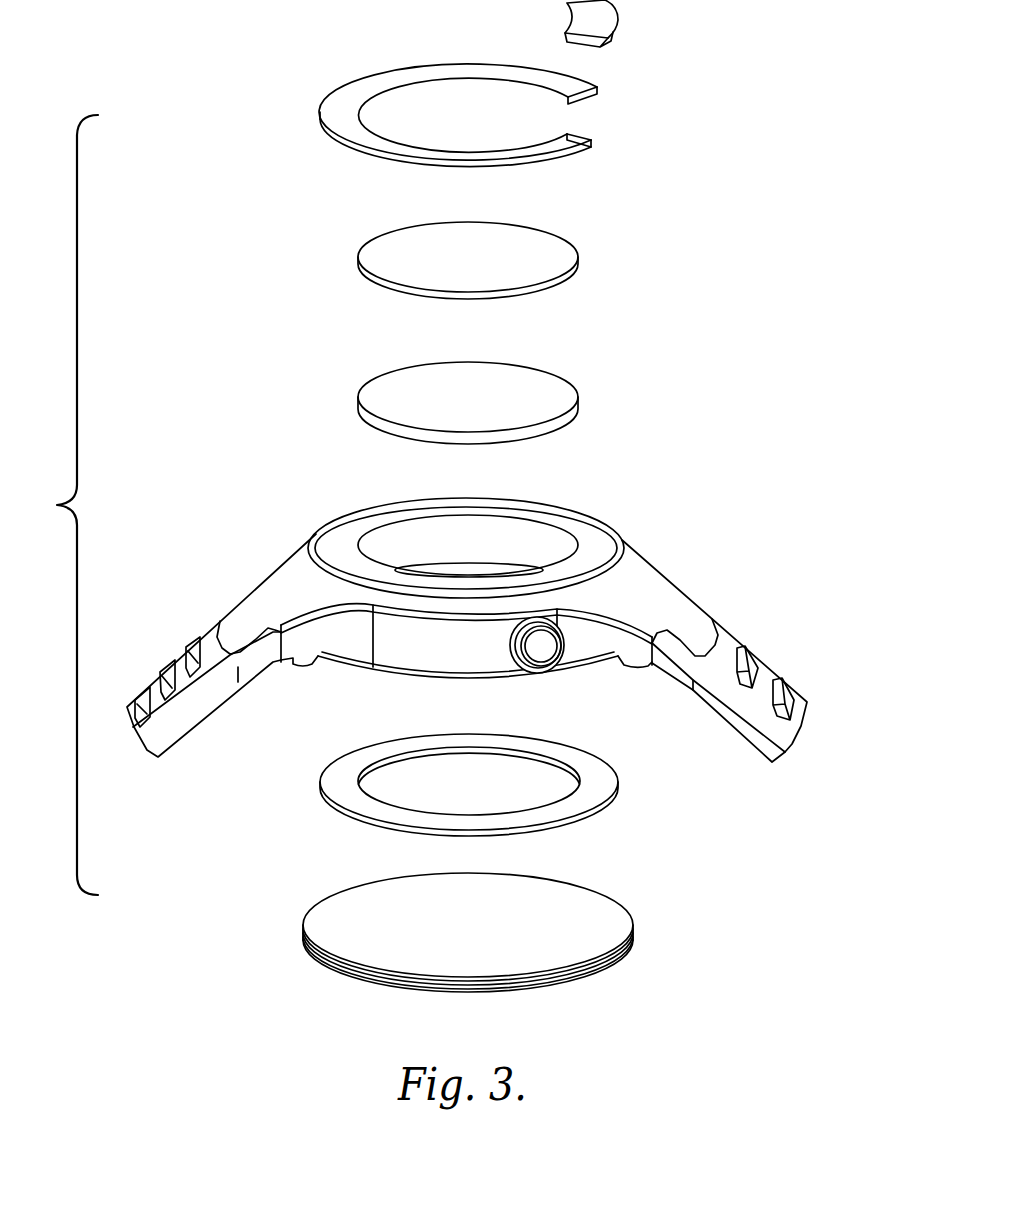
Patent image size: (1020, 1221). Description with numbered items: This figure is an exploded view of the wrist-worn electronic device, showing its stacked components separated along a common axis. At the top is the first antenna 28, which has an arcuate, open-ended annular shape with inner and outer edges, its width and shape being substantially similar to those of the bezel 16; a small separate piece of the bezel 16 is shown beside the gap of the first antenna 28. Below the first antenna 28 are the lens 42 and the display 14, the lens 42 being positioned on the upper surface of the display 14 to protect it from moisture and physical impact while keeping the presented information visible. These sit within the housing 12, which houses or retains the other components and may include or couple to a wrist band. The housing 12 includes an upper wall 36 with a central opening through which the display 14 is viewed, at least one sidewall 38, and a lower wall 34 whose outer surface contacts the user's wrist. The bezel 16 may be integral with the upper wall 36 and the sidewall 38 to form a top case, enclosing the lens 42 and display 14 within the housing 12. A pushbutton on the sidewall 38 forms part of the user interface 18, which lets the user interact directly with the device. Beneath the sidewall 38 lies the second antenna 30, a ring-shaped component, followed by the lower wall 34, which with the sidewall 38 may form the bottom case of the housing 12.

The housing 12 is at (467, 619).
The display 14 is at (373, 393).
The bezel 16 is at (612, 103).
The user interface 18 is at (552, 680).
The first antenna 28 is at (330, 107).
The second antenna 30 is at (337, 785).
The lower wall 34 is at (326, 928).
The upper wall 36 is at (602, 540).
The sidewall 38 is at (413, 653).
The lens 42 is at (377, 252).